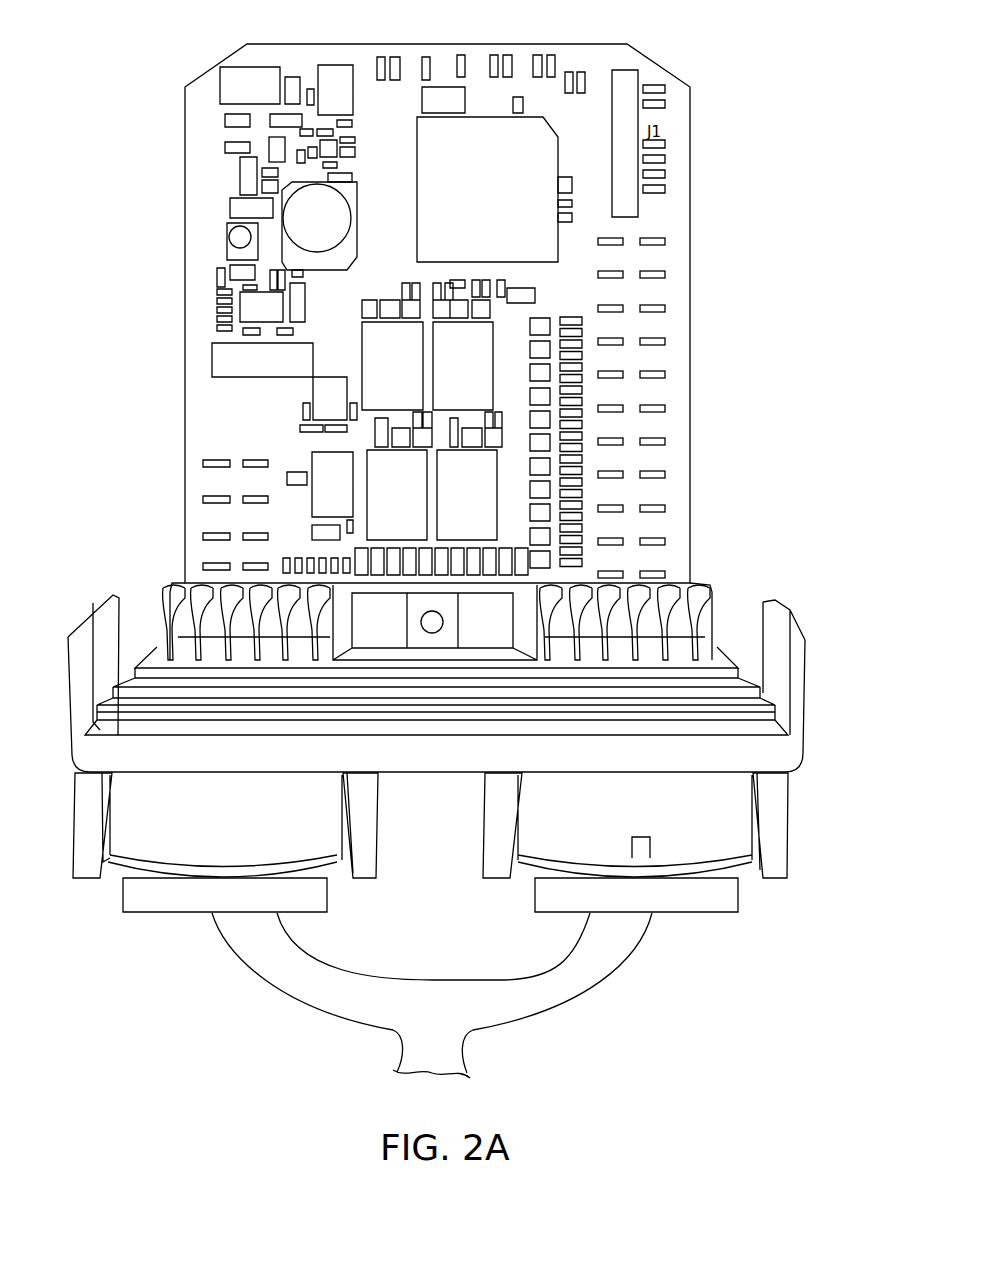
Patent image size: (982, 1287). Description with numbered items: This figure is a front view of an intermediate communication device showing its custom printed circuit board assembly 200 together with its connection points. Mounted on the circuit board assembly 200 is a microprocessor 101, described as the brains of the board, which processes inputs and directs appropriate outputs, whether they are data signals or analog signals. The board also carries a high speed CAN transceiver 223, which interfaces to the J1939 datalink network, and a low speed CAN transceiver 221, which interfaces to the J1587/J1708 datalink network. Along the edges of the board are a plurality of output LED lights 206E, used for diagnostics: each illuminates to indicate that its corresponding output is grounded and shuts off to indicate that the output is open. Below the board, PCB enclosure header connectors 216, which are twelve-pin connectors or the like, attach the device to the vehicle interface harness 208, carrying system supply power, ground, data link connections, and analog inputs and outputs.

The printed circuit board assembly 200 is at (692, 213).
The microprocessor 101 is at (503, 117).
The high speed CAN transceiver 223 is at (269, 145).
The low speed CAN transceiver 221 is at (312, 532).
The output LED lights 206E is at (444, 398).
The PCB enclosure header connectors 216 is at (513, 870).
The vehicle interface harness 208 is at (232, 960).